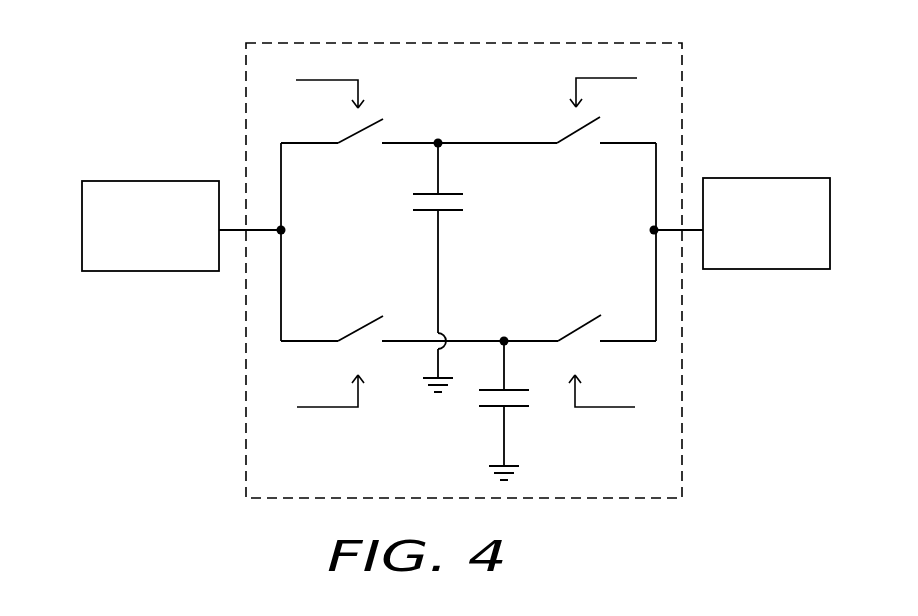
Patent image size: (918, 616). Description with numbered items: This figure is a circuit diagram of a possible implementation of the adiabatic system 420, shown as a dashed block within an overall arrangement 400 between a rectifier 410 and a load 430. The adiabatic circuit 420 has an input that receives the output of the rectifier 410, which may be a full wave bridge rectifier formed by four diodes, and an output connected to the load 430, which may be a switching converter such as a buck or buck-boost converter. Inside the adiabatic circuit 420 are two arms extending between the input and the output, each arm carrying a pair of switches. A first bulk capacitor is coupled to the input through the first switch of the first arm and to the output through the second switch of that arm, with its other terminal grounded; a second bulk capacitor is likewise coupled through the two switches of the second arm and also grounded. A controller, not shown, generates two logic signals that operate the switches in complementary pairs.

The power conversion system 400 is at (108, 68).
The rectifier 410 is at (161, 181).
The adiabatic system 420 is at (246, 463).
The load 430 is at (767, 178).